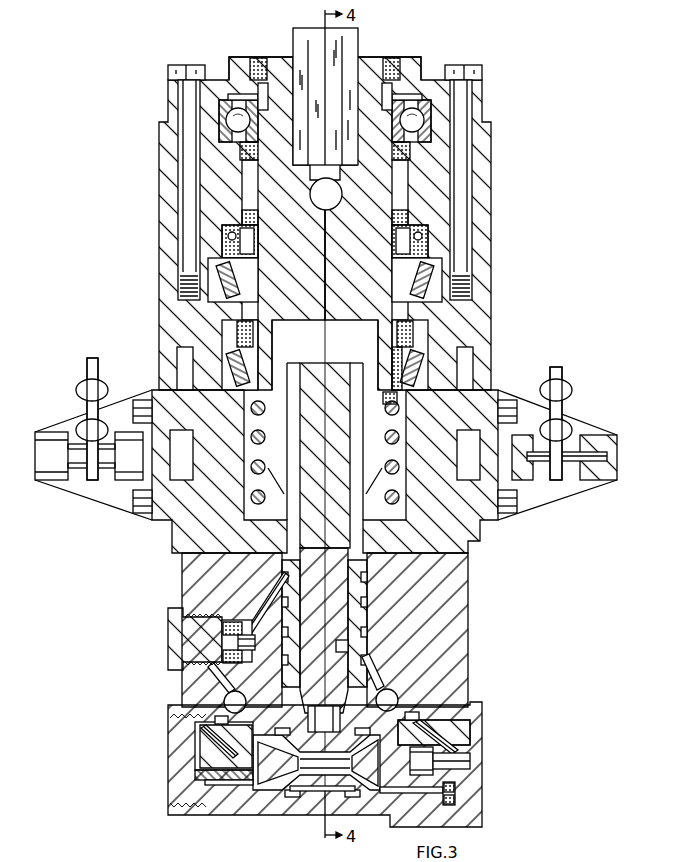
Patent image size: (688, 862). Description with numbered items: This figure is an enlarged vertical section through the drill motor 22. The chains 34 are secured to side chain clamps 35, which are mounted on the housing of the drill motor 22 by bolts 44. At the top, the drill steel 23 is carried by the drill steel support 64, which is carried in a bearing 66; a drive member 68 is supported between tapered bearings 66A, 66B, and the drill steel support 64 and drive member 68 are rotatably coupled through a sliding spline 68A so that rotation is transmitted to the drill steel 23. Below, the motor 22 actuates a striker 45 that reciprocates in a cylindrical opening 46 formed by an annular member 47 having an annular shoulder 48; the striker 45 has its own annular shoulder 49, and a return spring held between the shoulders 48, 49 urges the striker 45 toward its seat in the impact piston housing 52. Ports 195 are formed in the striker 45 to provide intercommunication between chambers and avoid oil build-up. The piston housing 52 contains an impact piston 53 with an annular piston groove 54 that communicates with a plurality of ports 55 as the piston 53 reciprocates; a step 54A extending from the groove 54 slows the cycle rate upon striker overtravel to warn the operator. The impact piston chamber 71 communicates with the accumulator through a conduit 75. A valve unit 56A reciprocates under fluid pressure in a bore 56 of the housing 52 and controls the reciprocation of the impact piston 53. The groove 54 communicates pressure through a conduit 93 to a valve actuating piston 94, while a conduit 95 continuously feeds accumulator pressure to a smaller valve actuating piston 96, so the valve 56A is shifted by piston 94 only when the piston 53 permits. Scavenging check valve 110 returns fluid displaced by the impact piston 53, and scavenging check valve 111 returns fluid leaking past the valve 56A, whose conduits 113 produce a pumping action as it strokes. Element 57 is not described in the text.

The drill motor 22 is at (494, 154).
The drill steel 23 is at (353, 44).
The chains 34 is at (90, 375).
The side chain clamps 35 is at (78, 488).
The bolts 44 is at (136, 400).
The striker 45 is at (325, 455).
The cylindrical opening 46 is at (378, 342).
The annular member 47 is at (263, 356).
The annular shoulder 48 is at (388, 400).
The annular shoulder 49 is at (402, 530).
The impact piston housing 52 is at (453, 613).
The impact piston 53 is at (335, 585).
The annular piston groove 54 is at (340, 655).
The step 54A is at (367, 658).
The ports 55 is at (287, 603).
The bore 56 is at (372, 797).
The valve unit 56A is at (308, 795).
The body section 57 is at (287, 548).
The drill steel support 64 is at (287, 72).
The bearing 66 is at (425, 100).
The tapered bearing 66A is at (413, 283).
The tapered bearing 66B is at (460, 334).
The drive member 68 is at (202, 363).
The sliding spline 68A is at (403, 307).
The impact piston chamber 71 is at (324, 719).
The conduit 75 is at (292, 760).
The conduit 93 is at (448, 745).
The valve actuating piston 94 is at (400, 762).
The conduit 95 is at (215, 743).
The valve actuating piston 96 is at (200, 780).
The scavenging check valve 110 is at (193, 635).
The scavenging check valve 111 is at (475, 798).
The conduits 113 is at (212, 813).
The ports 195 is at (283, 488).